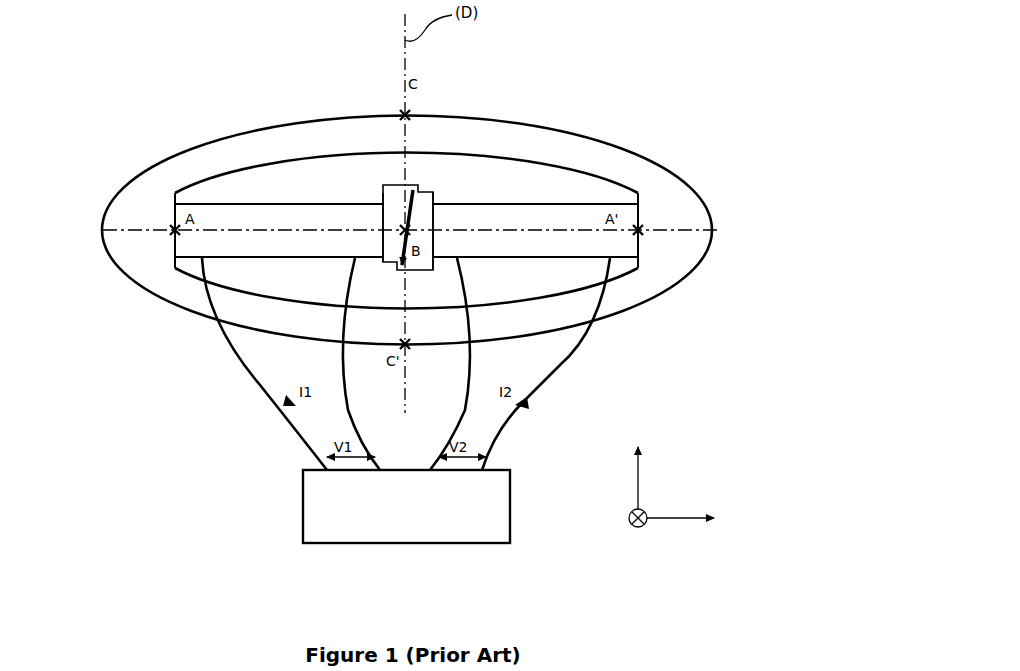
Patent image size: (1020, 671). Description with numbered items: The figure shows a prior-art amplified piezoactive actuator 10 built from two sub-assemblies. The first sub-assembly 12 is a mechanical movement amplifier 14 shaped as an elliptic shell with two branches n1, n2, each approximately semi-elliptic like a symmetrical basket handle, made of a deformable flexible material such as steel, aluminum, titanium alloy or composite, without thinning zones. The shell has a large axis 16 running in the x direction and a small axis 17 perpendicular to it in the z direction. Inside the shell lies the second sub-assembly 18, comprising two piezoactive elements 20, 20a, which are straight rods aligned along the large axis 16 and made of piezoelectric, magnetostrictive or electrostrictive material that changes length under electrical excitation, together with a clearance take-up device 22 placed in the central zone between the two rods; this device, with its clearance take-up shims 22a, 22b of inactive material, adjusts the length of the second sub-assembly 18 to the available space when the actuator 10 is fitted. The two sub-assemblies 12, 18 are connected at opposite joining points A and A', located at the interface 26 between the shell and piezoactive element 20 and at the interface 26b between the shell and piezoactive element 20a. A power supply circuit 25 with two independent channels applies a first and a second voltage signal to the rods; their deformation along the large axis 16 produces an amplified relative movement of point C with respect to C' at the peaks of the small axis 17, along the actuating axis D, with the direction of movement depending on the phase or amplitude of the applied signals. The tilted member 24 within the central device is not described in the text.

The piezoactive actuator 10 is at (707, 390).
The first sub-assembly 12 is at (320, 108).
The mechanical movement amplifier 14 is at (370, 130).
The large axis 16 is at (213, 232).
The small axis 17 is at (405, 166).
The second sub-assembly 18 is at (532, 182).
The piezoactive element 20 is at (308, 233).
The piezoactive element 20a is at (508, 228).
The clearance take-up device 22 is at (413, 184).
The clearance take-up shim 22a is at (383, 194).
The clearance take-up shim 22b is at (437, 193).
The lower portion of tilted electrode 24 is at (400, 253).
The power supply circuit 25 is at (312, 525).
The interface 26 is at (167, 222).
The interface 26b is at (643, 247).
The branch n1 is at (243, 155).
The branch n2 is at (625, 163).